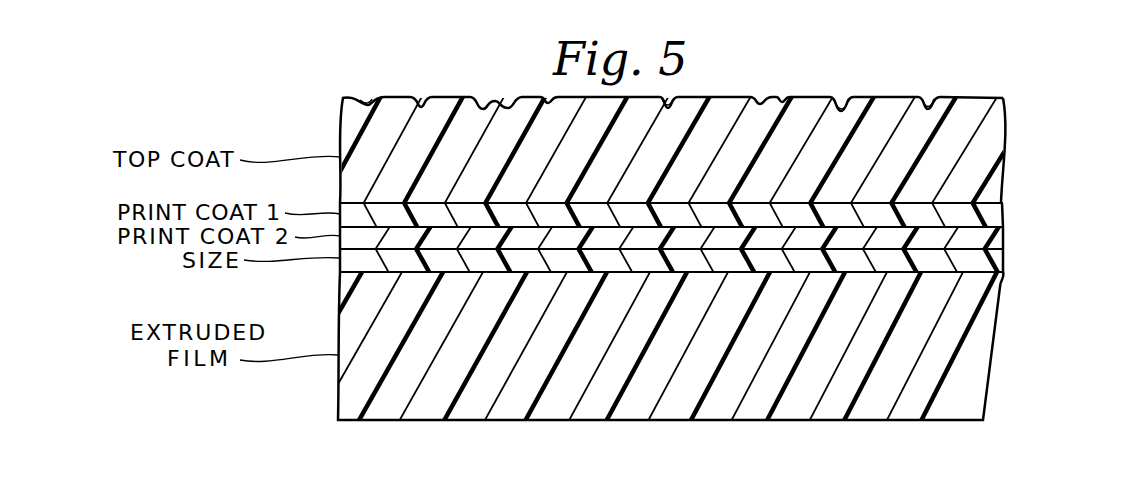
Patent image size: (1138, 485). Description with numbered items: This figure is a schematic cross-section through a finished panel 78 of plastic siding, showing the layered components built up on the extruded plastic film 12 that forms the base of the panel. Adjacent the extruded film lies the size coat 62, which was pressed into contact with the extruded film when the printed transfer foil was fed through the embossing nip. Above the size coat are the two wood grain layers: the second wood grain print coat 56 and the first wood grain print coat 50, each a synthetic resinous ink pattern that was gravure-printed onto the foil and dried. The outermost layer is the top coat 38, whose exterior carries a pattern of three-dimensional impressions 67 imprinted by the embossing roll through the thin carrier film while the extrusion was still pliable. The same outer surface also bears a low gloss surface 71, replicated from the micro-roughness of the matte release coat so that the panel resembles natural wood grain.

The extruded plastic film 12 is at (990, 350).
The top coat 38 is at (1003, 160).
The first wood grain print coat 50 is at (1003, 210).
The second wood grain print coat 56 is at (1003, 243).
The size coat 62 is at (1003, 262).
The three-dimensional impressions 67 is at (422, 98).
The low gloss surface 71 is at (716, 98).
The finished panel 78 is at (928, 90).